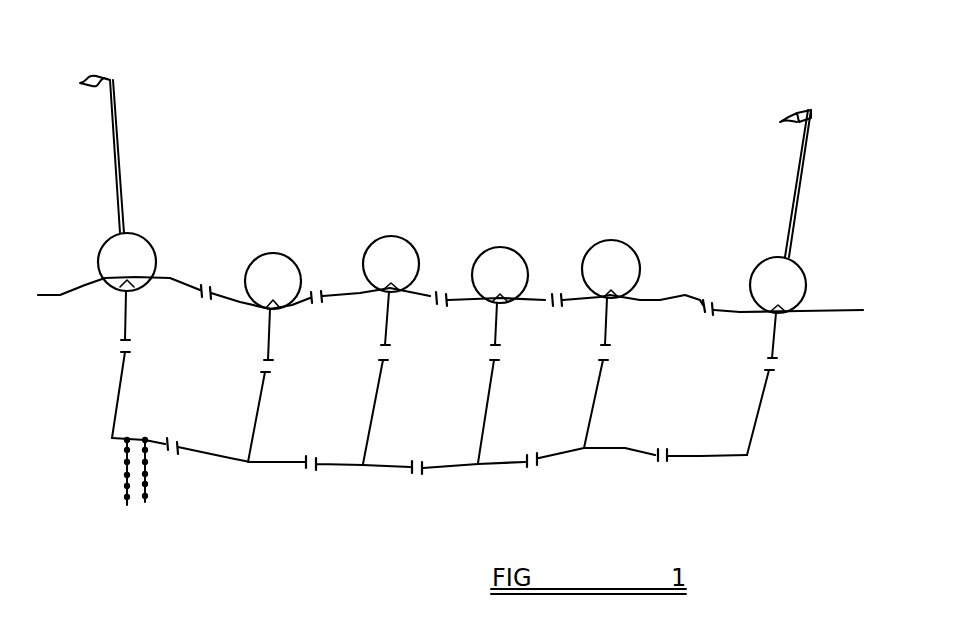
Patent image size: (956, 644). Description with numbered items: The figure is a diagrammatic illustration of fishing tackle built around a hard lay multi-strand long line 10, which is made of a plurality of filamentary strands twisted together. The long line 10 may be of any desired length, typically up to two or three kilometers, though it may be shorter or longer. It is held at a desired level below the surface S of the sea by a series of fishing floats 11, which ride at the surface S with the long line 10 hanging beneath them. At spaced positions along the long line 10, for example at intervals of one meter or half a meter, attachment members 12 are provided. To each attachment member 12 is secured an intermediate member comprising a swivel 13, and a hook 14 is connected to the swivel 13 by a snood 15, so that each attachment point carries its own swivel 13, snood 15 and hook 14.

The long line 10 is at (627, 452).
The fishing float 11 is at (365, 268).
The attachment member 12 is at (145, 440).
The swivel 13 is at (125, 465).
The hook 14 is at (125, 500).
The snood 15 is at (125, 488).
The surface of the sea S is at (826, 312).